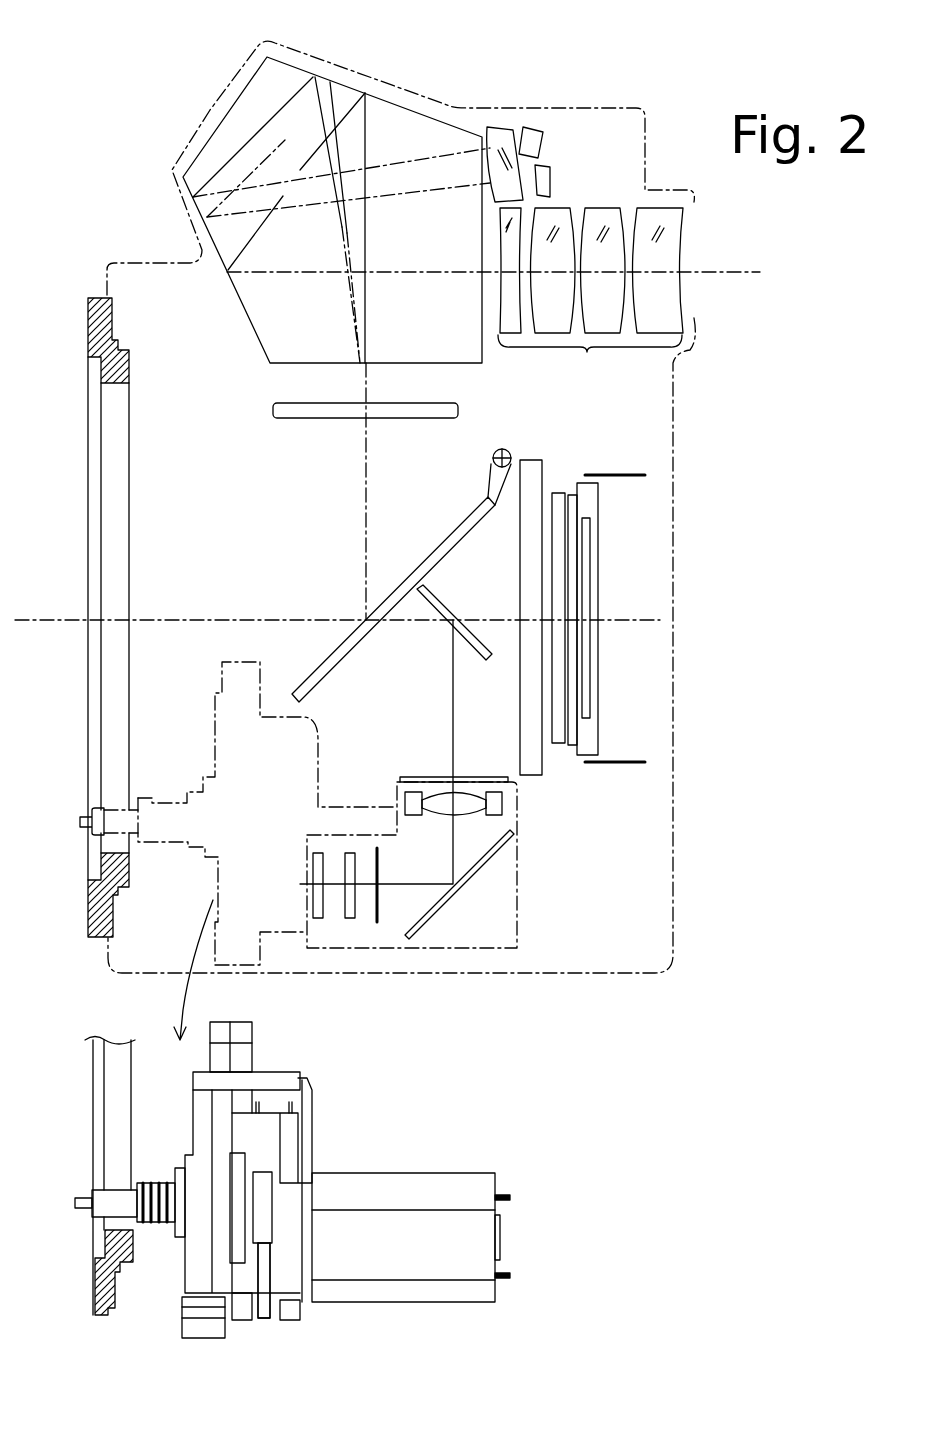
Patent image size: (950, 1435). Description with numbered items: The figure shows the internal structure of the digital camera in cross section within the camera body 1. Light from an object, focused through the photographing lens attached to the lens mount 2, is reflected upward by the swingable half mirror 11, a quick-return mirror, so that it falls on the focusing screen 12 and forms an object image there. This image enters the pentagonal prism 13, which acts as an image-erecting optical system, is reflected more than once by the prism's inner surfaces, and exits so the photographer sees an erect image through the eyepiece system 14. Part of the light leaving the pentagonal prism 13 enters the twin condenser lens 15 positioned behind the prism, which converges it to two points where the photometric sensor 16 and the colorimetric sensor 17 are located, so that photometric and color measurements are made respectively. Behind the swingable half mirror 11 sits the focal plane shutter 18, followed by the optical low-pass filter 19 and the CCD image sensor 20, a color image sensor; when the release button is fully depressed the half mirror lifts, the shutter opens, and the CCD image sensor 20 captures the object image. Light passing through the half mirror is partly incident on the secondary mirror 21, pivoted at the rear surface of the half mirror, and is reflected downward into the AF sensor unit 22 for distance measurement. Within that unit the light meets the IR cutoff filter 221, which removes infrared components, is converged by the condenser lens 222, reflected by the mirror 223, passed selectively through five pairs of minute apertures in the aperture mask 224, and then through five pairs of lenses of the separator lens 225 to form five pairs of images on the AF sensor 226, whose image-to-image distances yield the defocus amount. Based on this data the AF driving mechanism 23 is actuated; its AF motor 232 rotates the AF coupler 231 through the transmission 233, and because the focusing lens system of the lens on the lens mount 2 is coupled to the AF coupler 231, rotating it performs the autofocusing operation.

The camera body housing 1 is at (673, 958).
The lens mount 2 is at (88, 325).
The swingable half mirror 11 is at (338, 645).
The focusing screen 12 is at (305, 418).
The pentagonal prism 13 is at (290, 83).
The eyepiece system 14 is at (590, 299).
The twin condenser lens 15 is at (502, 130).
The photometric sensor 16 is at (548, 184).
The colorimetric sensor 17 is at (535, 133).
The focal plane shutter 18 is at (532, 775).
The optical low-pass filter 19 is at (560, 744).
The CCD image sensor 20 is at (587, 600).
The secondary mirror 21 is at (447, 618).
The AF sensor unit 22 is at (500, 975).
The AF driving mechanism 23 is at (318, 762).
The IR cutoff filter 221 is at (425, 777).
The condenser lens 222 is at (467, 798).
The mirror 223 is at (467, 878).
The aperture mask 224 is at (377, 925).
The separator lens 225 is at (350, 920).
The AF sensor 226 is at (318, 920).
The AF coupler 231 is at (83, 1210).
The AF motor 232 is at (393, 1272).
The transmission 233 is at (245, 1290).